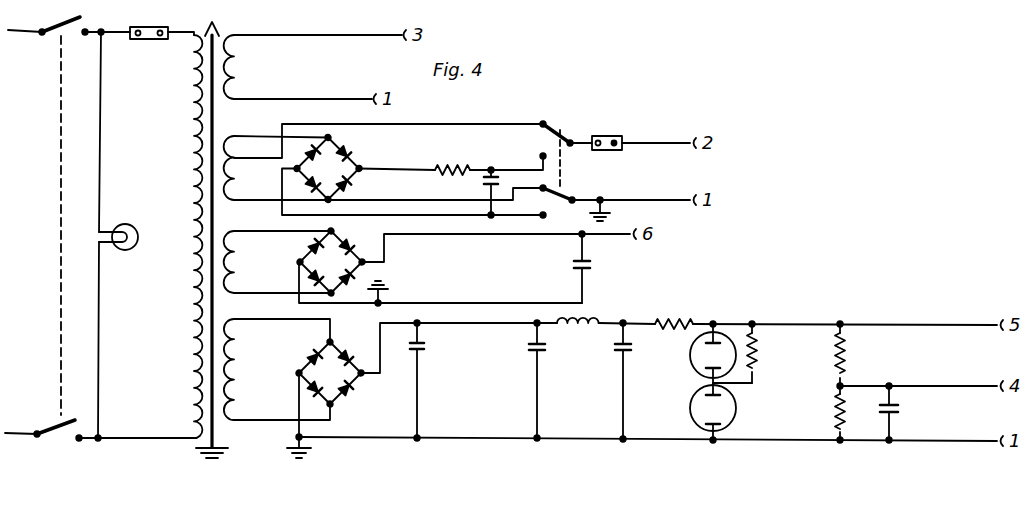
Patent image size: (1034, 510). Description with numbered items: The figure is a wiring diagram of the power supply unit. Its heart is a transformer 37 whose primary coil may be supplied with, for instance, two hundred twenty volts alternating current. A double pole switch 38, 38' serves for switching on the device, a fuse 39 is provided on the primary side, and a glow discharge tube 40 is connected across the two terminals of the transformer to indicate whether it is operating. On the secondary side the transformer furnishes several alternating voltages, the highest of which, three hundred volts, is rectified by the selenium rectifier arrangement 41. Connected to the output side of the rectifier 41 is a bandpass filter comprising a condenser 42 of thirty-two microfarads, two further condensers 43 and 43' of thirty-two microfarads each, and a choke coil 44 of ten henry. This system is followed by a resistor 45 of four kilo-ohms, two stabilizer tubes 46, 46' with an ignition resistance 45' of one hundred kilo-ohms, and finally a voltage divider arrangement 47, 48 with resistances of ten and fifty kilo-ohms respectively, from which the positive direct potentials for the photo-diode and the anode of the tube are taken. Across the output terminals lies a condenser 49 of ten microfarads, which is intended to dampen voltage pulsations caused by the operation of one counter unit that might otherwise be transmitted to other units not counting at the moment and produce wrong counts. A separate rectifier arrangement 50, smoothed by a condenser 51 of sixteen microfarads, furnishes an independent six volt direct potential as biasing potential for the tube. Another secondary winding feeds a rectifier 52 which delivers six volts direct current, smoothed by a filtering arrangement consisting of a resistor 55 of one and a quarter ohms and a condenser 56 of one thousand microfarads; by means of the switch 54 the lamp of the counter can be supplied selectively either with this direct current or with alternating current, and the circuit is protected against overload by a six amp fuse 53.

The transformer 37 is at (215, 230).
The double pole switch 38 is at (81, 16).
The double pole switch 38' is at (43, 448).
The fuse 39 is at (151, 40).
The glow discharge tube 40 is at (131, 226).
The selenium rectifier arrangement 41 is at (352, 390).
The condenser 42 is at (427, 344).
The condenser 43 is at (516, 380).
The condenser 43' is at (601, 381).
The choke coil 44 is at (603, 316).
The resistor 45 is at (679, 306).
The ignition resistance 45' is at (775, 353).
The stabilizer tube 46 is at (694, 353).
The stabilizer tube 46' is at (694, 411).
The voltage divider resistance 47 is at (848, 352).
The voltage divider resistance 48 is at (832, 417).
The condenser 49 is at (899, 409).
The rectifier arrangement 50 is at (299, 263).
The condenser 51 is at (572, 265).
The rectifier 52 is at (356, 179).
The fuse 53 is at (608, 135).
The switch 54 is at (556, 126).
The resistor 55 is at (458, 166).
The condenser 56 is at (482, 183).